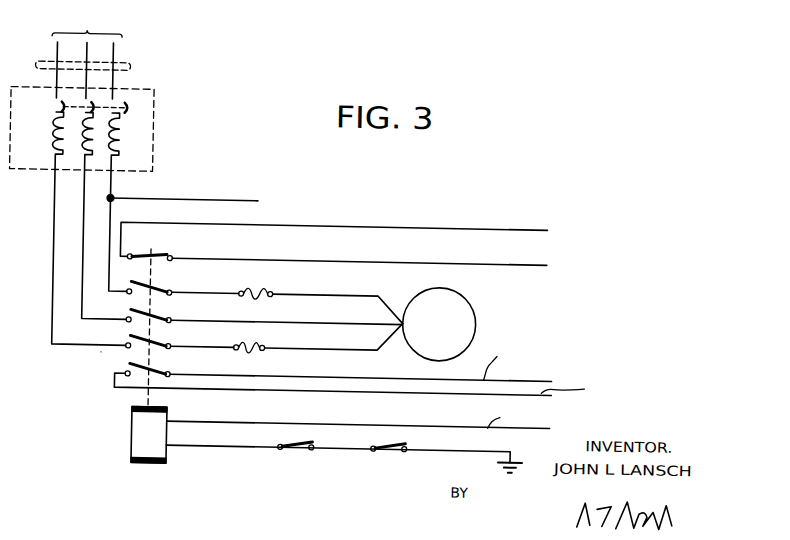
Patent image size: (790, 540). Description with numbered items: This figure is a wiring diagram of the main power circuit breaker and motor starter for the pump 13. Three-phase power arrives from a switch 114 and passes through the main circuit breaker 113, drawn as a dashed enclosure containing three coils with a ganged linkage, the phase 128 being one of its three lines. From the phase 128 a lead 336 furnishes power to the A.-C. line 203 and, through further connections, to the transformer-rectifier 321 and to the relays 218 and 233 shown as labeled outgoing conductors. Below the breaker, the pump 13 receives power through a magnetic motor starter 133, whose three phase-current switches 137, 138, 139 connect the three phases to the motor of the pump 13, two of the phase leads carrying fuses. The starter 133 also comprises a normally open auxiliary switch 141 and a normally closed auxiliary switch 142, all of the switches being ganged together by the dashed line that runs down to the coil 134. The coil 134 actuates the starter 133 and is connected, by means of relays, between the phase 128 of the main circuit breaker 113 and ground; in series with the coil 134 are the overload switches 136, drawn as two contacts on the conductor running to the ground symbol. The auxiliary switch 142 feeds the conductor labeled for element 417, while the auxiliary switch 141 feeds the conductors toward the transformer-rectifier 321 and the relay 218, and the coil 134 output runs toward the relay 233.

The pump 13 is at (460, 293).
The main circuit breaker 113 is at (152, 117).
The switch (FIG 2) 114 is at (152, 25).
The phase 128 is at (111, 80).
The magnetic motor starter 133 is at (103, 353).
The coil 134 is at (144, 440).
The overload switches 136 is at (395, 442).
The phase-current switch 137 is at (158, 344).
The phase-current switch 138 is at (158, 318).
The phase-current switch 139 is at (158, 290).
The normally open auxiliary switch 141 is at (160, 372).
The normally closed auxiliary switch 142 is at (162, 255).
The A.-C. line 203 is at (376, 235).
The relay (FIG 4a) 218 is at (616, 395).
The relay (FIG 5b) 233 is at (427, 417).
The transformer-rectifier (FIG 4b) 321 is at (599, 362).
The lead 336 is at (183, 198).
The element 417 (FIG 5a) 417 is at (587, 257).